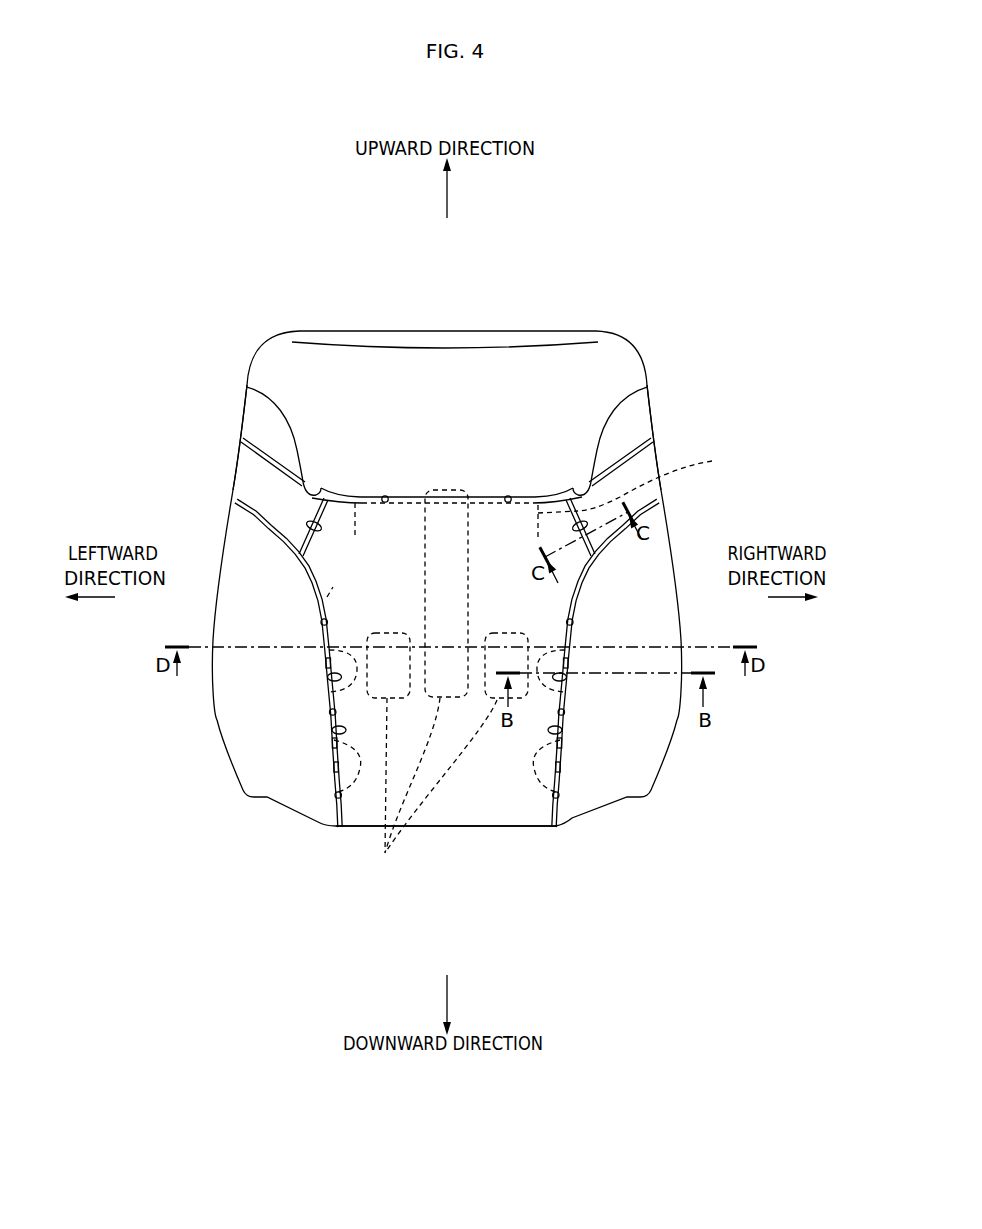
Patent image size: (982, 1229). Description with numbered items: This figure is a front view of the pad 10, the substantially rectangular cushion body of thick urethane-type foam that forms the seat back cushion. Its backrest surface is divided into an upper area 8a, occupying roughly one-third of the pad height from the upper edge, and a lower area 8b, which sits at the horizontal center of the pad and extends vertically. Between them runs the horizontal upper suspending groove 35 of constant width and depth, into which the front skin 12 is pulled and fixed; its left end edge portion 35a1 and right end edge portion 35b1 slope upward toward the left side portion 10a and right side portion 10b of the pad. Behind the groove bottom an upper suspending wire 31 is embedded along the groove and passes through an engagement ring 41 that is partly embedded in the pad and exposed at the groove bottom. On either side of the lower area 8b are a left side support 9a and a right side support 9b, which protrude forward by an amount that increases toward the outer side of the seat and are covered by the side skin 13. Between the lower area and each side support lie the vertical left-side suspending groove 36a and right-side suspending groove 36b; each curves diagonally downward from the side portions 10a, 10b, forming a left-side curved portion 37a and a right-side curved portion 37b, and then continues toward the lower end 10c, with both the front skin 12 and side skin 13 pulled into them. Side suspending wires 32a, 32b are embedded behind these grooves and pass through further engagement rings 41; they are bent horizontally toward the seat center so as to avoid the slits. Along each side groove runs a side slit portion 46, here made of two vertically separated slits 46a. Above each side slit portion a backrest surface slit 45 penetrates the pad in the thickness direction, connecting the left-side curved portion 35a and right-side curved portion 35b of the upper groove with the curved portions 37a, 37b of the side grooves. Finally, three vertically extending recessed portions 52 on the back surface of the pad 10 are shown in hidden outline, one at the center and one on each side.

The pad 10 is at (632, 322).
The upper area 8a is at (360, 363).
The lower area 8b is at (440, 798).
The upper suspending groove 35 is at (447, 492).
The left-side curved portion 35a is at (247, 387).
The right-side curved portion 35b is at (643, 390).
The end edge portion 35a1 is at (243, 440).
The end edge portion 35b1 is at (645, 440).
The side portion 10a is at (243, 455).
The side portion 10b is at (650, 457).
The lower end 10c is at (446, 813).
The upper suspending wire 31 is at (663, 479).
The backrest surface slit 45 is at (300, 553).
The left-side curved portion 37a is at (292, 552).
The right-side curved portion 37b is at (610, 548).
The side skin 13 is at (253, 587).
The left side support 9a is at (222, 636).
The right side support 9b is at (665, 635).
The engagement ring 41 is at (385, 496).
The side slit portion 46 is at (318, 666).
The slit 46a is at (330, 678).
The left-side suspending groove 36a is at (330, 738).
The right-side suspending groove 36b is at (564, 731).
The side suspending wire 32a is at (345, 810).
The side suspending wire 32b is at (553, 814).
The recessed portion 52 is at (433, 791).
The front skin 12 is at (503, 792).